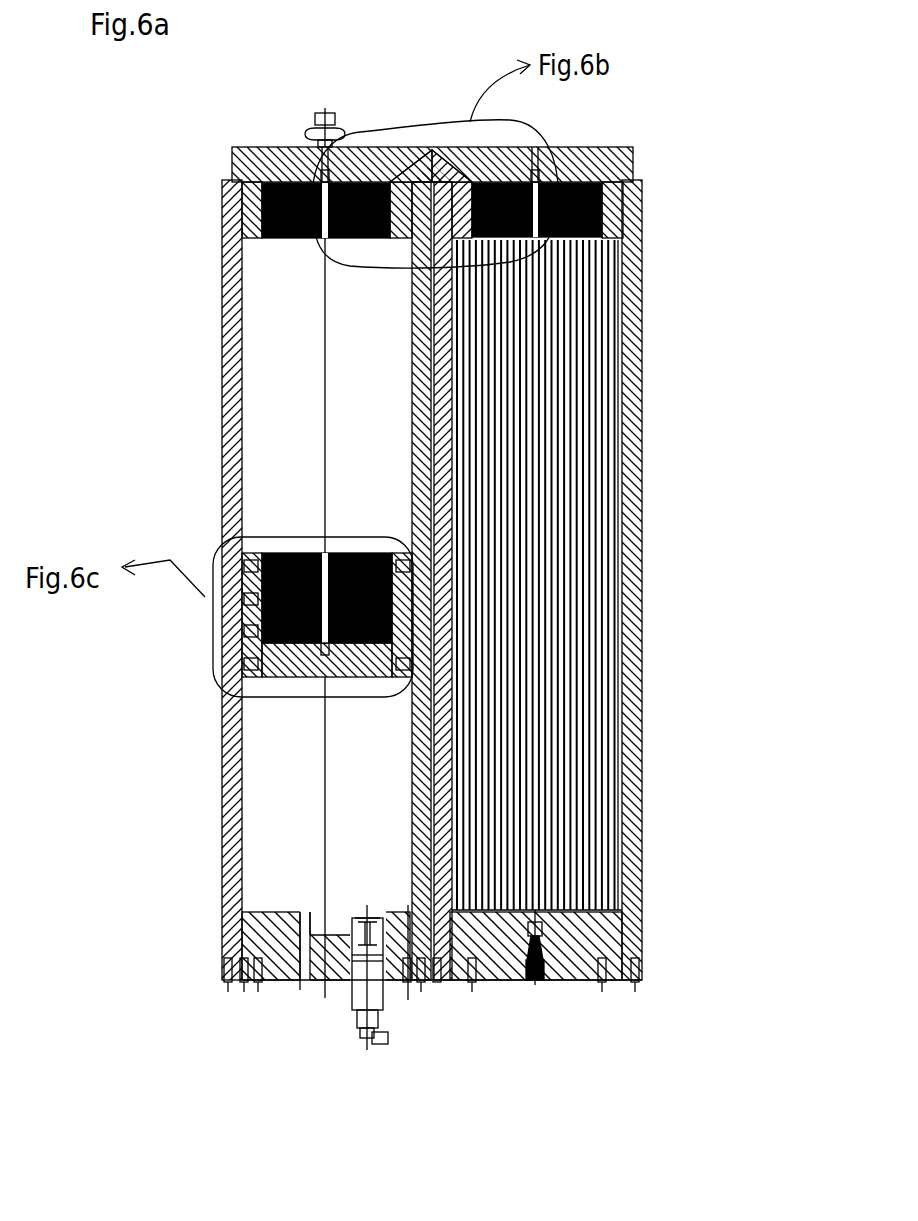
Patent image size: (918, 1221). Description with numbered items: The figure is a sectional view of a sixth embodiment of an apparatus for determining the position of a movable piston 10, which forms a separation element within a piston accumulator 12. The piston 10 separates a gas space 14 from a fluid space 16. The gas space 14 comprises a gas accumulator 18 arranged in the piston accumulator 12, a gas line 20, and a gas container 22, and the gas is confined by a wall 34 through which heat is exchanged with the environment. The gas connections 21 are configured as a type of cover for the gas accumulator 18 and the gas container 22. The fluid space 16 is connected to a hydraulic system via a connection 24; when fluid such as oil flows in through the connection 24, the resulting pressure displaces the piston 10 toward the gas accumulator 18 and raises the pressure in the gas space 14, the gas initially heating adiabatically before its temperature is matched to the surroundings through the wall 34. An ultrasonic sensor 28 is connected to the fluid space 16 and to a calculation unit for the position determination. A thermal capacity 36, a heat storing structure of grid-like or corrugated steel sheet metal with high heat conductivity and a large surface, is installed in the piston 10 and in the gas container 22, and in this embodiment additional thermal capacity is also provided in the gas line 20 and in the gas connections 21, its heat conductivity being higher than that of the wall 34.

The piston 10 is at (243, 700).
The piston accumulator 12 is at (382, 506).
The gas space 14 is at (200, 165).
The fluid space 16 is at (265, 837).
The gas accumulator 18 is at (263, 322).
The gas line 20 is at (432, 150).
The gas connections 21 is at (255, 178).
The gas container 22 is at (580, 487).
The connection 24 is at (305, 968).
The ultrasonic sensor 28 is at (373, 1003).
The wall 34 is at (300, 168).
The thermal capacity 36 is at (588, 805).